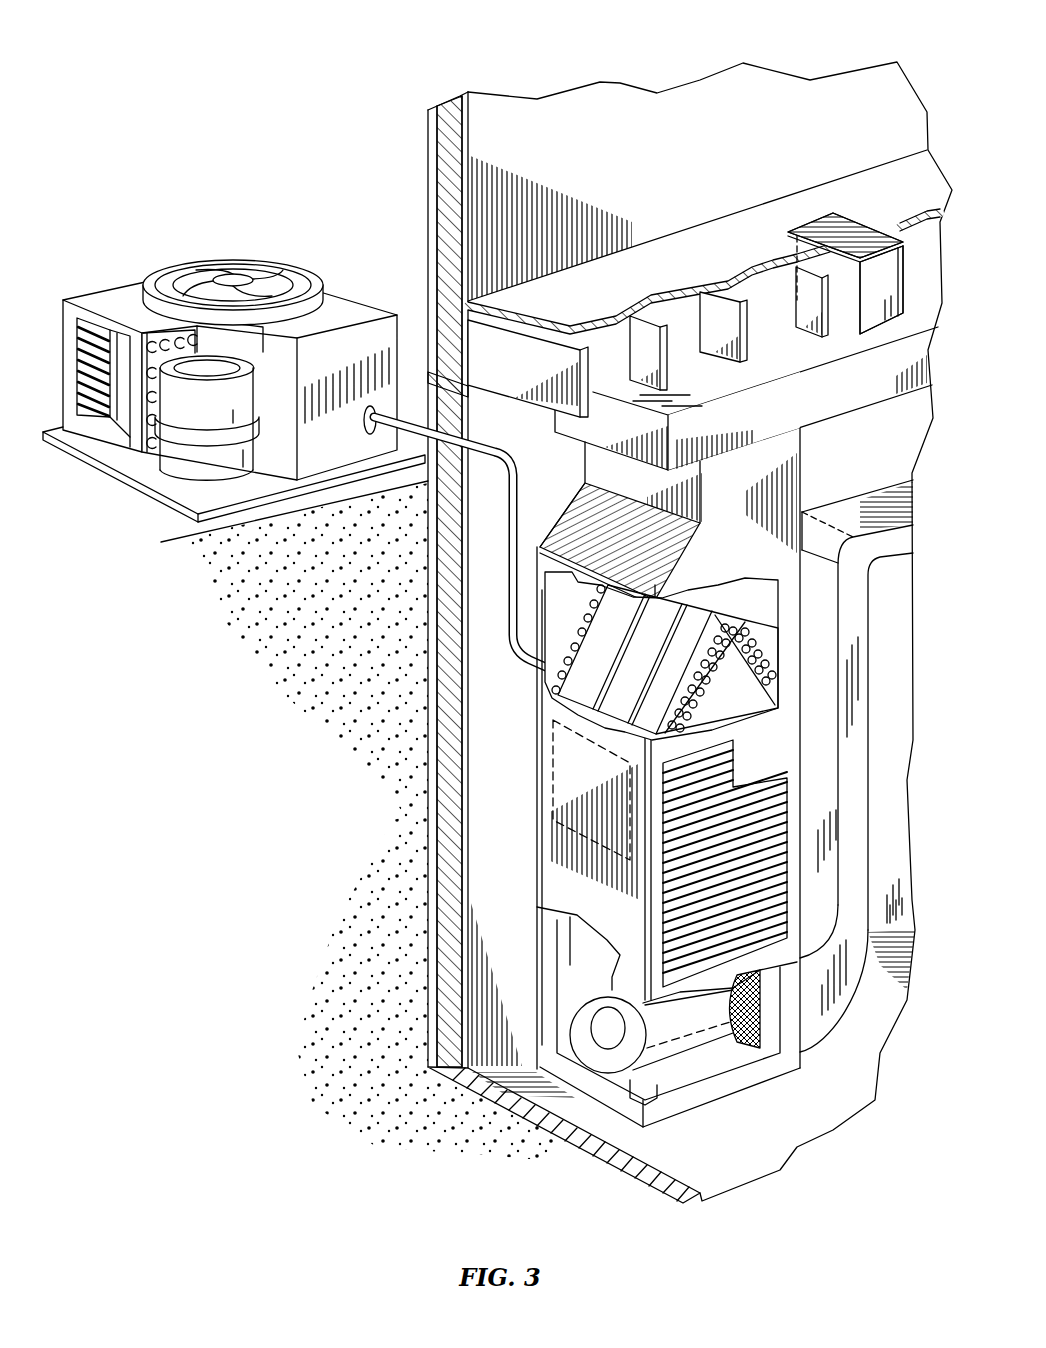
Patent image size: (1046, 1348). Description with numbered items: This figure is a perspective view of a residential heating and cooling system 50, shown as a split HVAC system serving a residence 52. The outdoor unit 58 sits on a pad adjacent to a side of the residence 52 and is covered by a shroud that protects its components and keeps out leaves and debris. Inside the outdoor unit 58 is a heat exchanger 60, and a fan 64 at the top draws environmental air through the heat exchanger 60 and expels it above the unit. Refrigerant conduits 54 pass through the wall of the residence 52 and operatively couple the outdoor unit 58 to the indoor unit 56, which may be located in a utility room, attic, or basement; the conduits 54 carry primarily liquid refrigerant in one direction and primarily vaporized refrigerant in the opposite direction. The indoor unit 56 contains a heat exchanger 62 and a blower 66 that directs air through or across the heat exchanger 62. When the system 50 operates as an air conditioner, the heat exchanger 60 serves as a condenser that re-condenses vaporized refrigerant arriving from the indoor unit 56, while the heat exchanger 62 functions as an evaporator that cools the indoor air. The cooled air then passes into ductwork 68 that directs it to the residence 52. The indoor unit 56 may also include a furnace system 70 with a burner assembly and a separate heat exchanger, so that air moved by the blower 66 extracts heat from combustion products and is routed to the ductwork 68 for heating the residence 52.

The residential heating and cooling system 50 is at (348, 38).
The residence 52 is at (592, 101).
The refrigerant conduits 54 is at (505, 518).
The indoor unit 56 is at (517, 823).
The outdoor unit 58 is at (175, 249).
The heat exchanger 60 is at (152, 348).
The heat exchanger 62 is at (616, 690).
The fan 64 is at (256, 262).
The blower 66 is at (597, 1053).
The ductwork 68 is at (917, 356).
The furnace system 70 is at (552, 750).